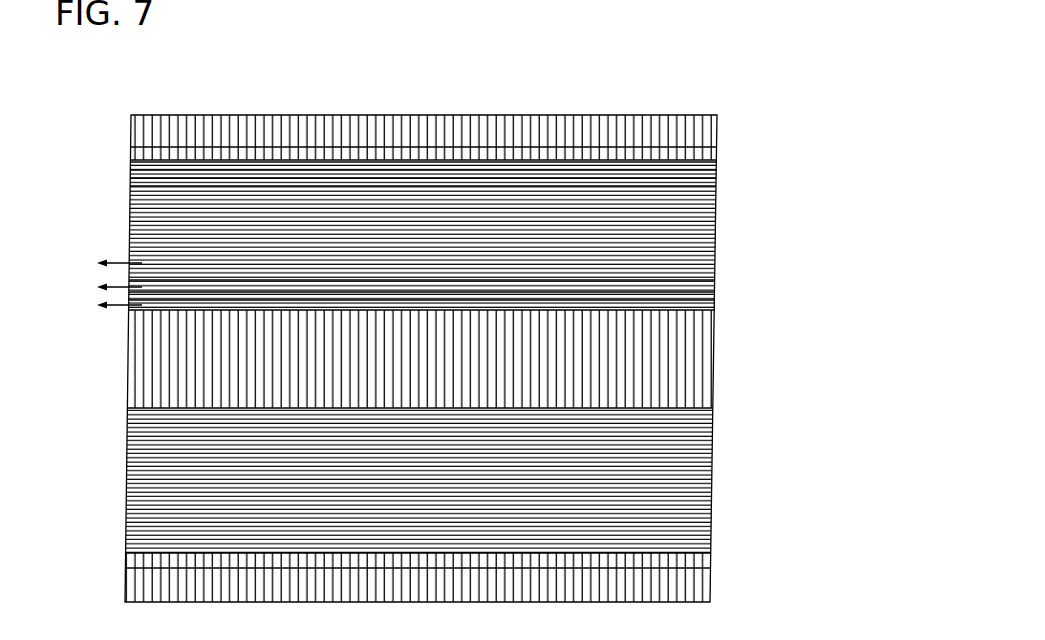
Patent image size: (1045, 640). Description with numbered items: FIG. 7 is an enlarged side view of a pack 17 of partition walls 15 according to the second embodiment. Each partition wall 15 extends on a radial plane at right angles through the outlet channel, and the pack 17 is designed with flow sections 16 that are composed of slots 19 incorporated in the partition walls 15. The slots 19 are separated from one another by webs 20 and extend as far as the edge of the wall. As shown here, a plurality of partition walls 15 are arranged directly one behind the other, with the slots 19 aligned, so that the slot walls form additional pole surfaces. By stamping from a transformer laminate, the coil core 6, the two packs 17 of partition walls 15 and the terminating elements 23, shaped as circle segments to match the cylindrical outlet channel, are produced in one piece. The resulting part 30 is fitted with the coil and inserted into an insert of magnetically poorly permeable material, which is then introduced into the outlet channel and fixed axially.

The coil core 6 is at (586, 324).
The partition wall 15 is at (278, 114).
The flow section 16 is at (96, 305).
The pack of partition walls 17 is at (494, 160).
The slot 19 is at (716, 300).
The web 20 is at (716, 170).
The terminating element 23 is at (590, 115).
The part 30 is at (399, 100).